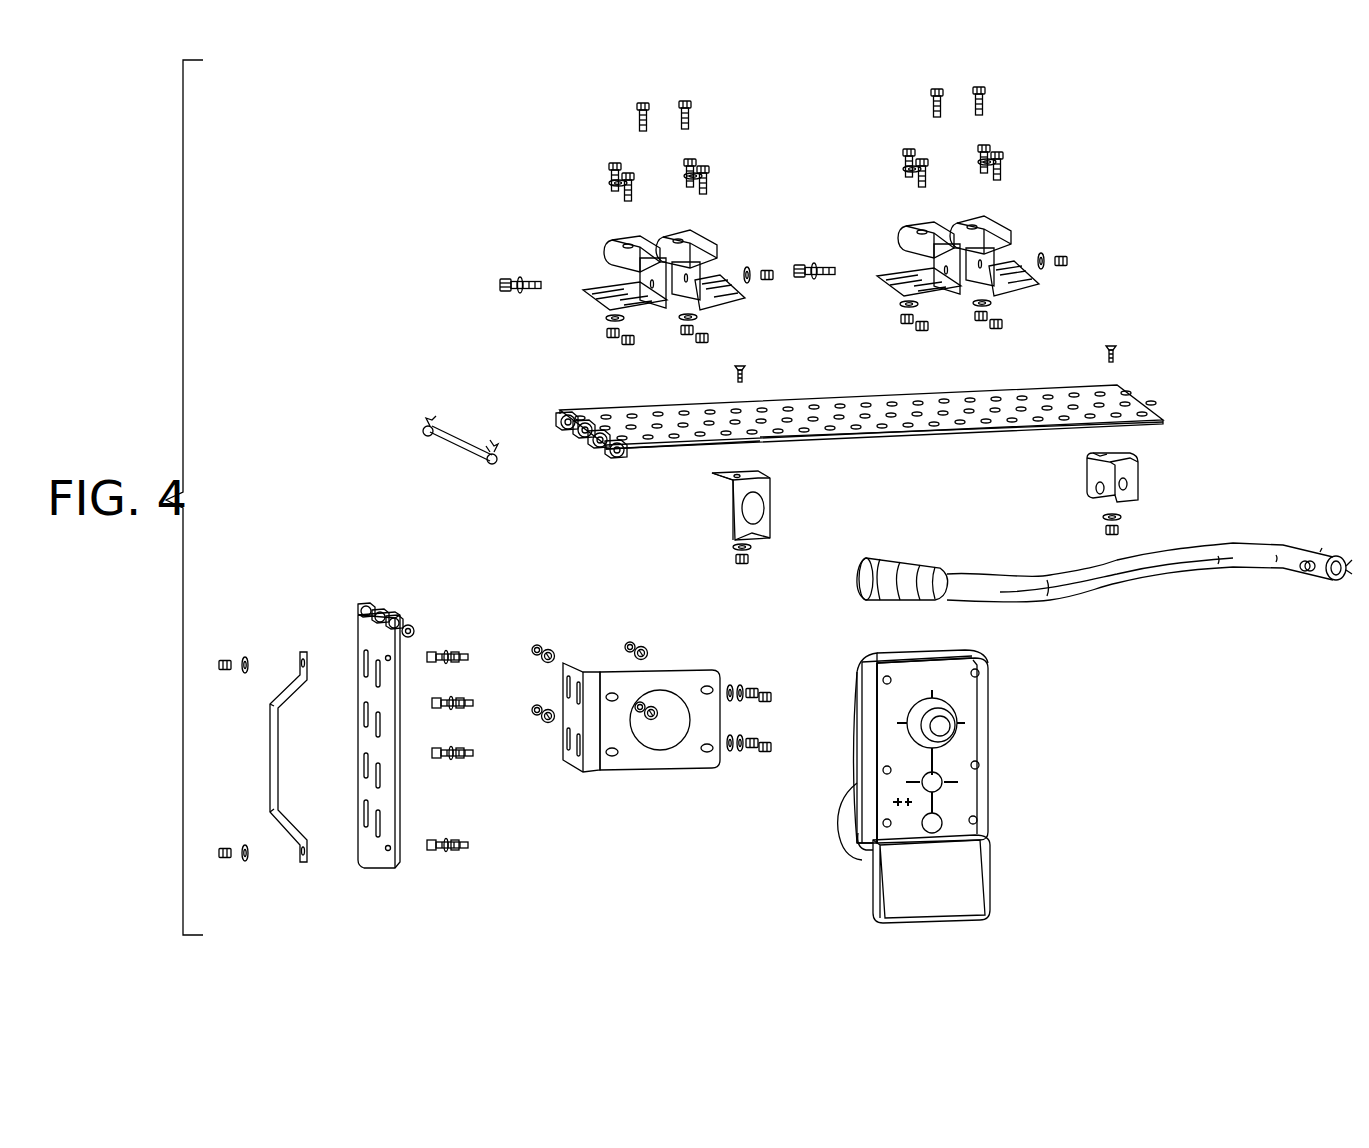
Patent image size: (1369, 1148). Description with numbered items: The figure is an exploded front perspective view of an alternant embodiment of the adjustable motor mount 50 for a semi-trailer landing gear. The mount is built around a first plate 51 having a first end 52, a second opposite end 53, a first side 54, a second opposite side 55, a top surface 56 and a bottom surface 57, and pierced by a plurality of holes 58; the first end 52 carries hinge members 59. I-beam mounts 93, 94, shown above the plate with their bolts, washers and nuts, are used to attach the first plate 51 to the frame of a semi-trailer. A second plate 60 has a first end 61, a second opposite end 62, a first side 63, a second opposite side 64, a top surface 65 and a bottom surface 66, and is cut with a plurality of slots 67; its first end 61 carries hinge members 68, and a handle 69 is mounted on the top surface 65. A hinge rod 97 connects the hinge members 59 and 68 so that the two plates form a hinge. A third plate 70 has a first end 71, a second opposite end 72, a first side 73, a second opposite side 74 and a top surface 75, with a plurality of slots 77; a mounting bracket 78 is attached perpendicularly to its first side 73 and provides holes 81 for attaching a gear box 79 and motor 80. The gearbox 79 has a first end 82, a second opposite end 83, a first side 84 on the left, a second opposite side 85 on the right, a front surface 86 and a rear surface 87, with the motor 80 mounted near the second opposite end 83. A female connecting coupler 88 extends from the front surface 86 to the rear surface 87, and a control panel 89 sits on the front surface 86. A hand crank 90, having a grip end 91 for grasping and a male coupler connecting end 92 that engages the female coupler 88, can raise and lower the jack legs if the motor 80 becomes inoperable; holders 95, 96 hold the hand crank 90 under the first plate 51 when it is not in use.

The adjustable motor mount 50 is at (425, 128).
The first plate 51 is at (1077, 383).
The first end 52 is at (550, 406).
The second opposite end 53 is at (1150, 378).
The first side 54 is at (945, 433).
The second opposite side 55 is at (920, 388).
The top surface 56 is at (787, 412).
The bottom surface 57 is at (878, 450).
The plurality of holes 58 is at (675, 410).
The hinge members 59 is at (617, 457).
The second plate 60 is at (360, 682).
The first end 61 is at (357, 593).
The second opposite end 62 is at (393, 886).
The first side 63 is at (400, 780).
The second opposite side 64 is at (360, 782).
The top surface 65 is at (364, 735).
The bottom surface 66 is at (440, 822).
The plurality of slots 67 is at (362, 822).
The hinge members 68 is at (413, 630).
The handle 69 is at (265, 748).
The third plate 70 is at (580, 660).
The first end 71 is at (590, 658).
The second opposite end 72 is at (588, 800).
The first side 73 is at (600, 758).
The second opposite side 74 is at (560, 668).
The top surface 75 is at (570, 715).
The plurality of slots 77 is at (570, 760).
The mounting bracket 78 is at (680, 670).
The gear box 79 is at (975, 738).
The motor 80 is at (845, 830).
The holes 81 is at (710, 690).
The first end 82 is at (915, 650).
The second opposite end 83 is at (860, 855).
The first side 84 is at (860, 740).
The second opposite side 85 is at (988, 776).
The front surface 86 is at (975, 812).
The rear surface 87 is at (830, 692).
The female connecting coupler 88 is at (945, 700).
The control panel 89 is at (985, 898).
The hand crank 90 is at (1130, 585).
The grip end 91 is at (880, 560).
The male coupler connecting end 92 is at (1298, 548).
The I-beam mount 93 is at (692, 248).
The I-beam mount 94 is at (987, 236).
The holder 95 is at (732, 512).
The holder 96 is at (1138, 480).
The hinge rod 97 is at (462, 445).